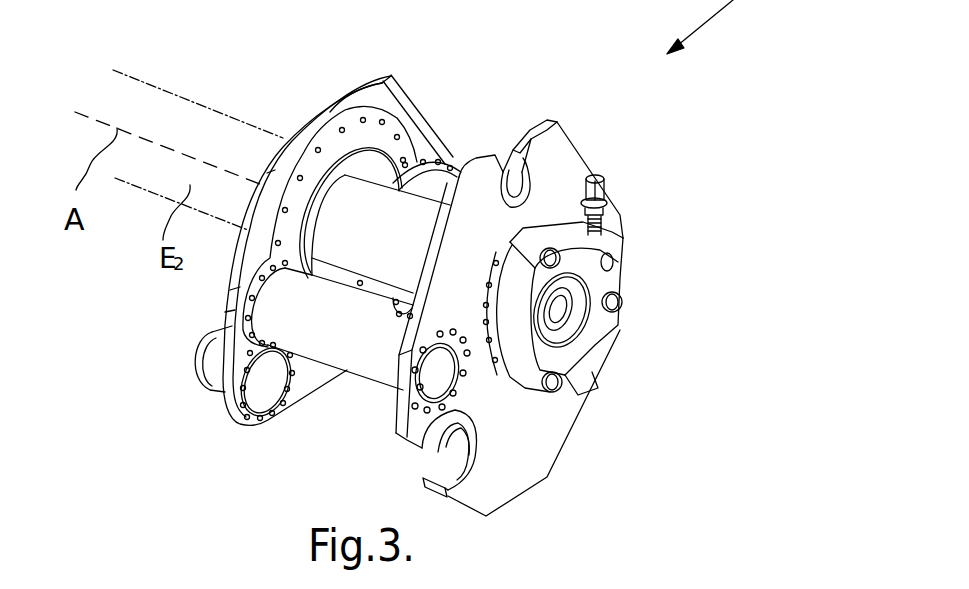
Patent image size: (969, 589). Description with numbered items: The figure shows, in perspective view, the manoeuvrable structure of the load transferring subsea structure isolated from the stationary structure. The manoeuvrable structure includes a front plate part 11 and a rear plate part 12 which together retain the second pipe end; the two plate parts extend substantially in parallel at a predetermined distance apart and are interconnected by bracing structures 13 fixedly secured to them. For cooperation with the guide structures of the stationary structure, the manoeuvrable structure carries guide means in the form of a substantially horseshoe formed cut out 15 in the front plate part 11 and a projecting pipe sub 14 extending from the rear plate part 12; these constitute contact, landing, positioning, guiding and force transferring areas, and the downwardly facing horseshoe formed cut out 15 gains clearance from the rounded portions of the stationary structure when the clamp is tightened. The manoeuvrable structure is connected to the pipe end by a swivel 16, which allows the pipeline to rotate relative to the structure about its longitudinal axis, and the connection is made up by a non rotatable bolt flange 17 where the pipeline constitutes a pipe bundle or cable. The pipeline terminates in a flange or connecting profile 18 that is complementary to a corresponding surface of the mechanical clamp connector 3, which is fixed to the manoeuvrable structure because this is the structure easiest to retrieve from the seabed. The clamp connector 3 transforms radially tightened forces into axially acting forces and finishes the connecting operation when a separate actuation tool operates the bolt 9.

The mechanical clamp connector 3 is at (592, 245).
The bolt 9 is at (603, 193).
The front plate part 11 is at (557, 143).
The rear plate part 12 is at (416, 128).
The bracing structures 13 is at (438, 187).
The projecting pipe sub 14 is at (258, 392).
The horseshoe formed cut out 15 is at (465, 453).
The swivel 16 is at (341, 167).
The non rotatable bolt flange 17 is at (393, 128).
The flange or connecting profile 18 is at (555, 330).